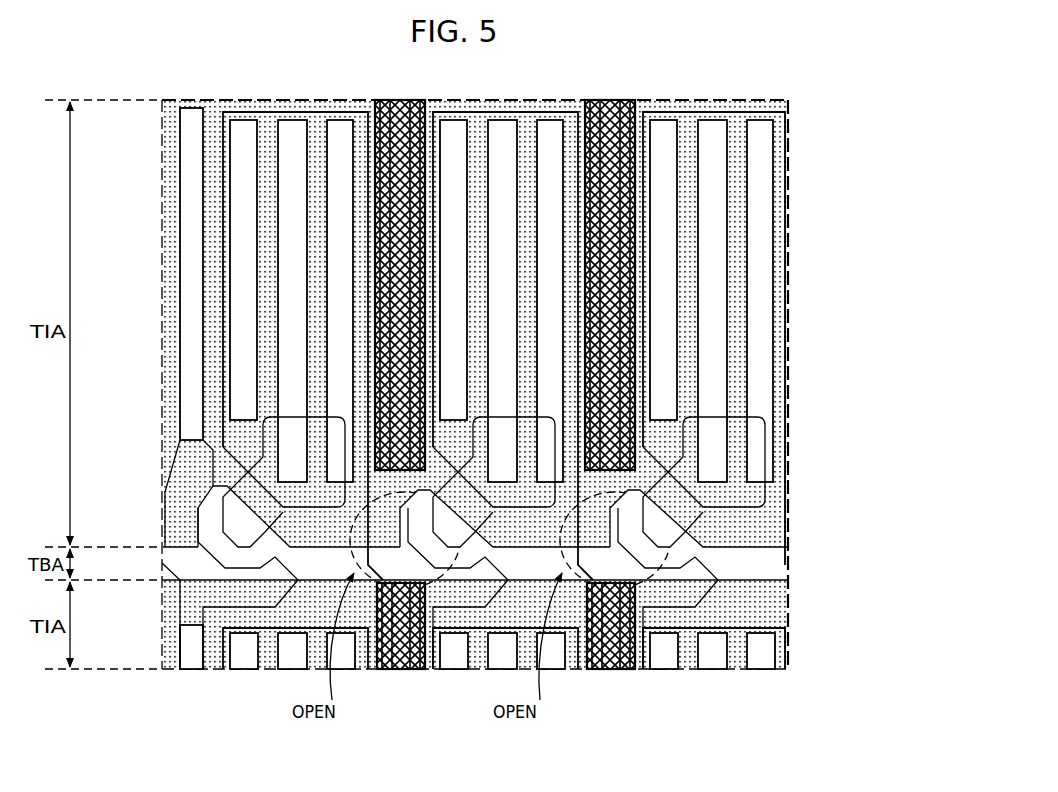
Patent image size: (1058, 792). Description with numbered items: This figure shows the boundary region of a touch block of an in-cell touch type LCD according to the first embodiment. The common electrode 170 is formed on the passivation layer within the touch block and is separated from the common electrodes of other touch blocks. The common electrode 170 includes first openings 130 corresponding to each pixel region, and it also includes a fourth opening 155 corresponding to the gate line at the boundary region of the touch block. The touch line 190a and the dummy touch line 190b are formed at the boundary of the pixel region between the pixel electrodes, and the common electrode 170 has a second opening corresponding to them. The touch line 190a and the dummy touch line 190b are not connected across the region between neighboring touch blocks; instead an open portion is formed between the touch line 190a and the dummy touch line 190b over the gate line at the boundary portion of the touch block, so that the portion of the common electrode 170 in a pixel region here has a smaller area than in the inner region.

The first opening 130 is at (764, 313).
The fourth opening 155 is at (772, 569).
The common electrode 170 is at (772, 112).
The touch line 190a is at (400, 669).
The dummy touch line 190b is at (396, 100).